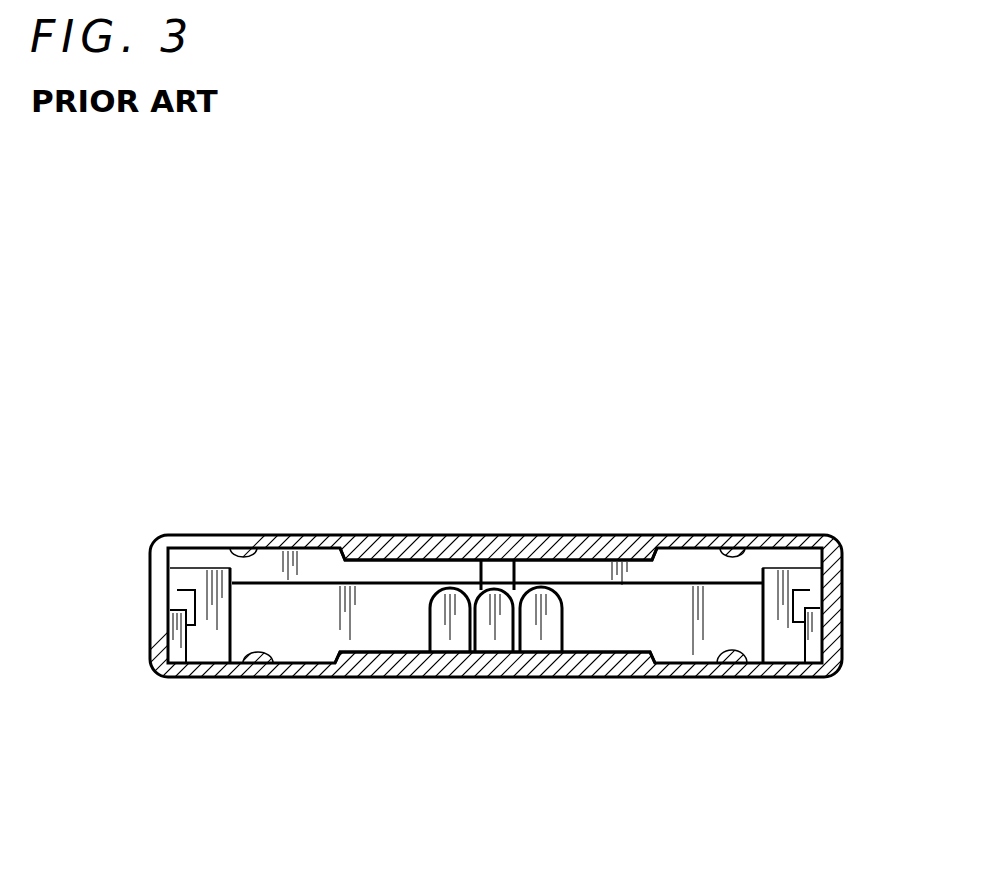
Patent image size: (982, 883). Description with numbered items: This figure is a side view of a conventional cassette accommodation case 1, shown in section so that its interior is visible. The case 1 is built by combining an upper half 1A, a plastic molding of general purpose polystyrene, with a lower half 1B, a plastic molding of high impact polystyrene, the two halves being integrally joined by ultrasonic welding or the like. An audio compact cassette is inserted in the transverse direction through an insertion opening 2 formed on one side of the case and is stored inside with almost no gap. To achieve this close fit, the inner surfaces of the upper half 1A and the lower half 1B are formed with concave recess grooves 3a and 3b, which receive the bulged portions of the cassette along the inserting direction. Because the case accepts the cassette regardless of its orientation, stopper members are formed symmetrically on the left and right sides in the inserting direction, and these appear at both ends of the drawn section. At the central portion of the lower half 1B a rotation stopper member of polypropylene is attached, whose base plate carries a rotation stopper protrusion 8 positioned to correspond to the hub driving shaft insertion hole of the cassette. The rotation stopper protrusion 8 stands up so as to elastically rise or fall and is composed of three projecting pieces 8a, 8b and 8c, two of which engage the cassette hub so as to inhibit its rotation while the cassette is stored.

The cassette accommodation case 1 is at (300, 536).
The upper half 1A is at (371, 537).
The lower half 1B is at (377, 677).
The insertion opening 2 is at (645, 611).
The recess groove 3a is at (218, 540).
The recess groove 3b is at (240, 676).
The rotation stopper protrusion 8 is at (591, 456).
The projecting piece 8a is at (543, 590).
The projecting piece 8b is at (495, 590).
The projecting piece 8c is at (448, 590).